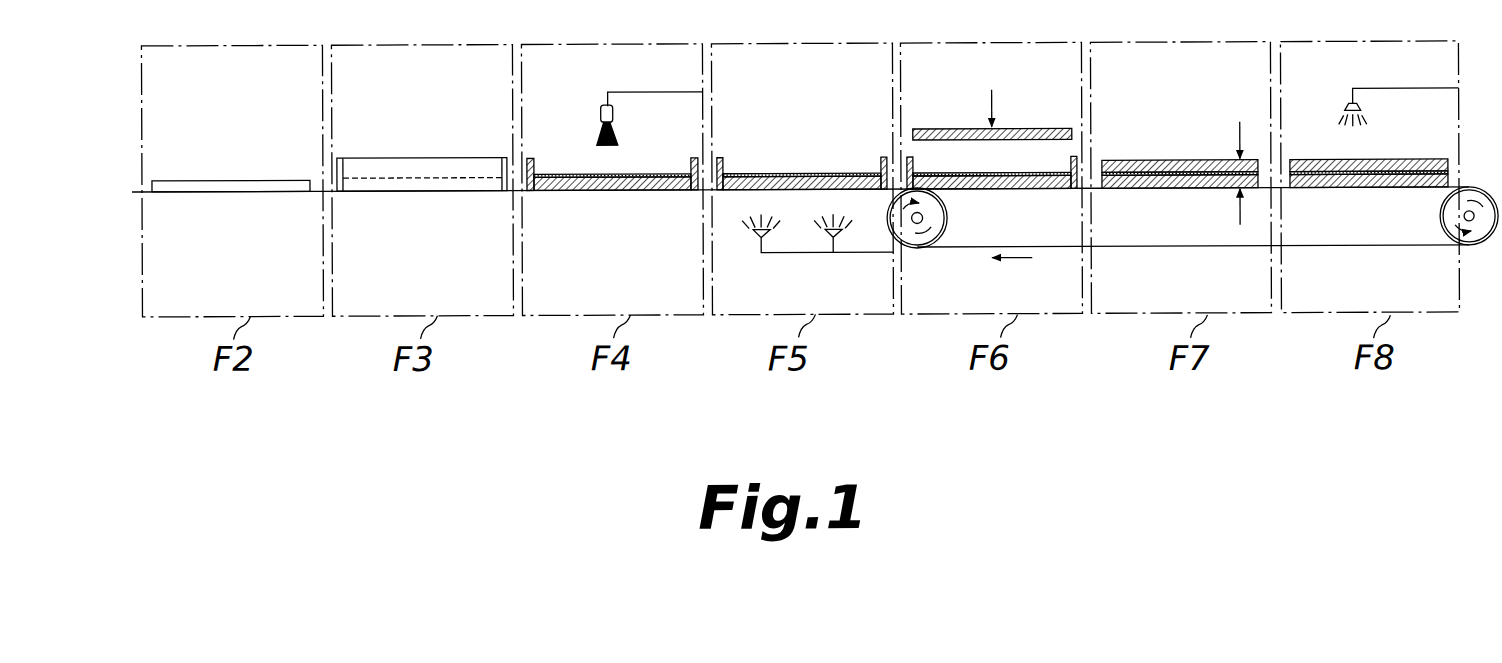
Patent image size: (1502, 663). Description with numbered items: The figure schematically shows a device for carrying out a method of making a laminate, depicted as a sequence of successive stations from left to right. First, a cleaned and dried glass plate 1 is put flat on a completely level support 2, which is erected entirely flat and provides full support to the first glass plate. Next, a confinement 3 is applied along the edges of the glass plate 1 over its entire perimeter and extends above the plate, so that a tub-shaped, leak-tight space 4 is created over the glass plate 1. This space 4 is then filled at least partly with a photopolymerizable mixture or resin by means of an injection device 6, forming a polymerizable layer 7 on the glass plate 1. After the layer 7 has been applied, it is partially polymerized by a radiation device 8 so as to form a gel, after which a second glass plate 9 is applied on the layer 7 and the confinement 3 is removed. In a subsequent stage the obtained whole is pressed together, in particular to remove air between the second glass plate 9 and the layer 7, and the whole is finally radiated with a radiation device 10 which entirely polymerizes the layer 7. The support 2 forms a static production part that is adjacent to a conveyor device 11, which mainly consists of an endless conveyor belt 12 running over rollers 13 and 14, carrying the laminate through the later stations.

The glass plate 1 is at (216, 182).
The support 2 is at (313, 195).
The confinement 3 is at (344, 166).
The leak-tight space 4 is at (453, 172).
The injection device 6 is at (617, 79).
The polymerizable layer 7 is at (640, 174).
The radiation device 8 is at (767, 264).
The second glass plate 9 is at (1032, 131).
The radiation device 10 is at (1363, 77).
The conveyor device 11 is at (1069, 252).
The endless conveyor belt 12 is at (1086, 194).
The roller 13 is at (940, 248).
The roller 14 is at (1446, 246).